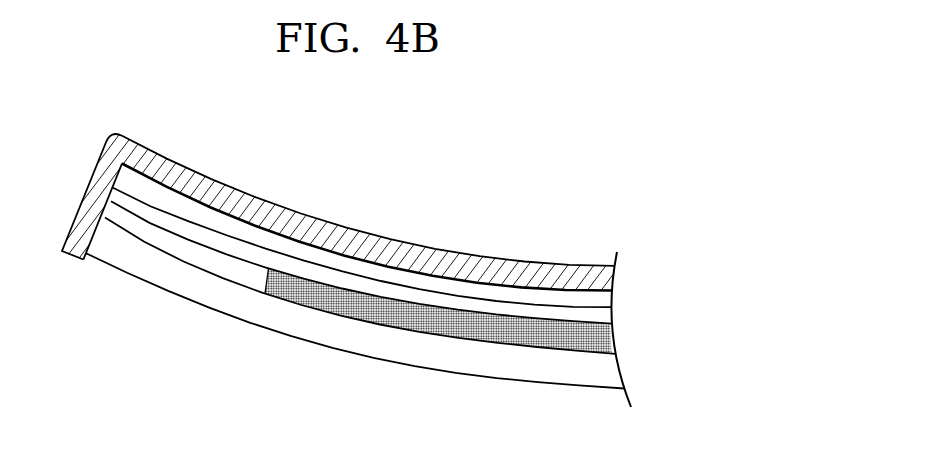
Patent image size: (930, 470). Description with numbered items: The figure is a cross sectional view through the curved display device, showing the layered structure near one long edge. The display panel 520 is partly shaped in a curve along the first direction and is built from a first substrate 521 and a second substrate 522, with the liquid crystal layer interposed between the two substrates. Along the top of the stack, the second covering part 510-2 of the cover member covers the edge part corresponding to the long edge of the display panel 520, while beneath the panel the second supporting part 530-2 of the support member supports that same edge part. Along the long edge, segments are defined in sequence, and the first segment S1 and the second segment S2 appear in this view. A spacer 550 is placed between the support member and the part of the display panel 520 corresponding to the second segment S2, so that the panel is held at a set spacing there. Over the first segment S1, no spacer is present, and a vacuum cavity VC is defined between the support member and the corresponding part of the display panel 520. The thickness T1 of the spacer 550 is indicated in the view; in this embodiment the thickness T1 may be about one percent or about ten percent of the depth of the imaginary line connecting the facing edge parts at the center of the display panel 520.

The second covering part 510-2 is at (516, 272).
The display panel 520 is at (434, 263).
The first substrate 521 is at (605, 317).
The second substrate 522 is at (605, 298).
The spacer 550 is at (609, 338).
The second supporting part 530-2 is at (623, 370).
The vacuum cavity VC is at (243, 268).
The thickness of the spacer T1 is at (414, 330).
The first segment S1 is at (244, 348).
The second segment S2 is at (617, 413).